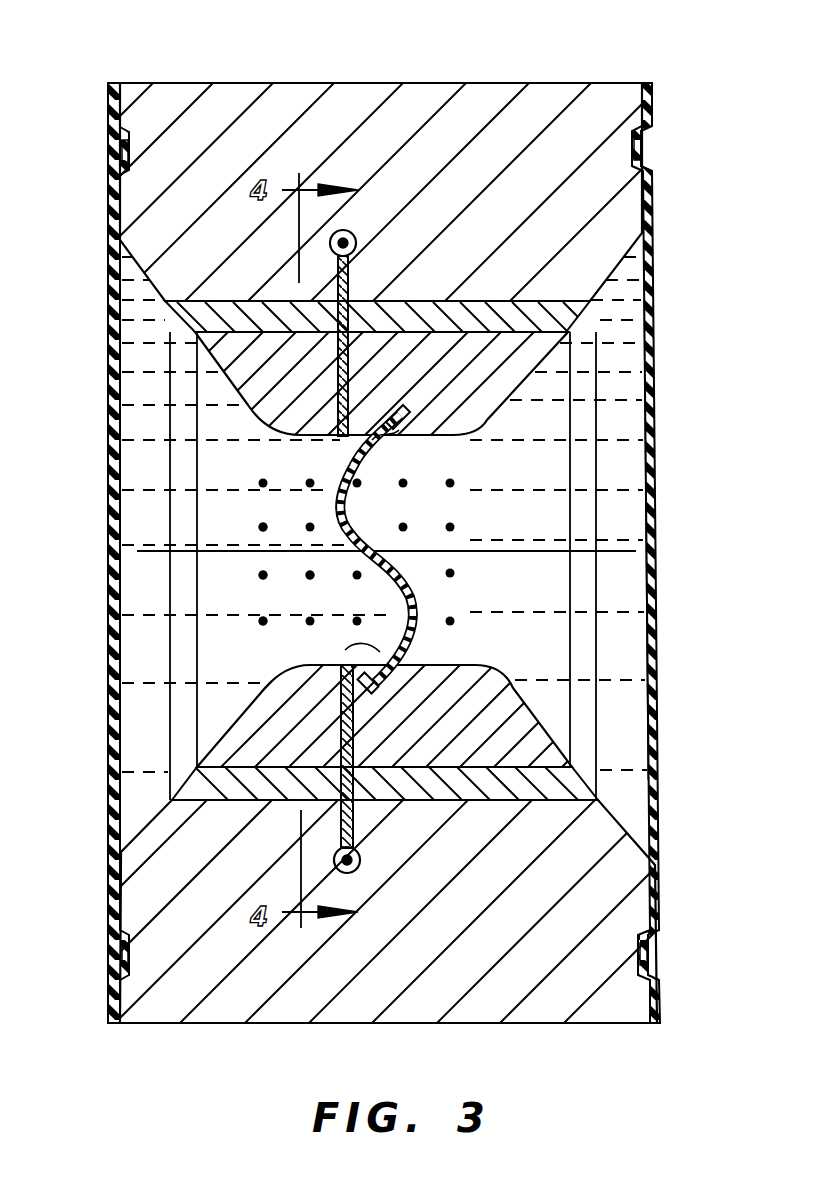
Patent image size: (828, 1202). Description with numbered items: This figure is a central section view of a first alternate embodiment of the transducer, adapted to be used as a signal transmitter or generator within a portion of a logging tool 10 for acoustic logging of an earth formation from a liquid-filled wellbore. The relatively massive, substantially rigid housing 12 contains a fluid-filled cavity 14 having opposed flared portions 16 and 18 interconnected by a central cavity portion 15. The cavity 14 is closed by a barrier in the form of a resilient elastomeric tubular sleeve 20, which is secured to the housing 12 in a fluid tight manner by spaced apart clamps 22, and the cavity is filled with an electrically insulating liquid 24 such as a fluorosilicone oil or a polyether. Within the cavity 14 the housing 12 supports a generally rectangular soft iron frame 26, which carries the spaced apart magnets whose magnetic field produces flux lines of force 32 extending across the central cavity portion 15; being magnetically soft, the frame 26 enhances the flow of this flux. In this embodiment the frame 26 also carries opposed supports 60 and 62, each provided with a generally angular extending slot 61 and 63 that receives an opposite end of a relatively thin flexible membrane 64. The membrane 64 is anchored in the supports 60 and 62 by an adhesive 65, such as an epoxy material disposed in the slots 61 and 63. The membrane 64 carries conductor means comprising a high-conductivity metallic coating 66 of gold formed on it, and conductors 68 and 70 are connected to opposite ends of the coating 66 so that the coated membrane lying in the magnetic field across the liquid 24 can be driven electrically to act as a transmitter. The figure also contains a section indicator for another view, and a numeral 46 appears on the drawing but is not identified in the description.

The logging tool 10 is at (530, 62).
The housing 12 is at (432, 83).
The fluid-filled cavity 14 is at (552, 479).
The central cavity portion 15 is at (296, 517).
The flared portion 16 is at (622, 366).
The flared portion 18 is at (150, 356).
The resilient elastomeric tubular sleeve 20 is at (656, 632).
The clamps 22 is at (653, 150).
The electrically insulating liquid 24 is at (628, 480).
The soft iron frame 26 is at (438, 790).
The magnetic flux lines of force 32 is at (263, 528).
The orifice 46 is at (430, 549).
The support 60 is at (228, 378).
The slot 61 is at (425, 402).
The support 62 is at (265, 683).
The slot 63 is at (412, 692).
The flexible membrane 64 is at (452, 574).
The adhesive 65 is at (372, 444).
The metallic coating 66 is at (346, 477).
The conductor 68 is at (356, 251).
The conductor 70 is at (338, 852).